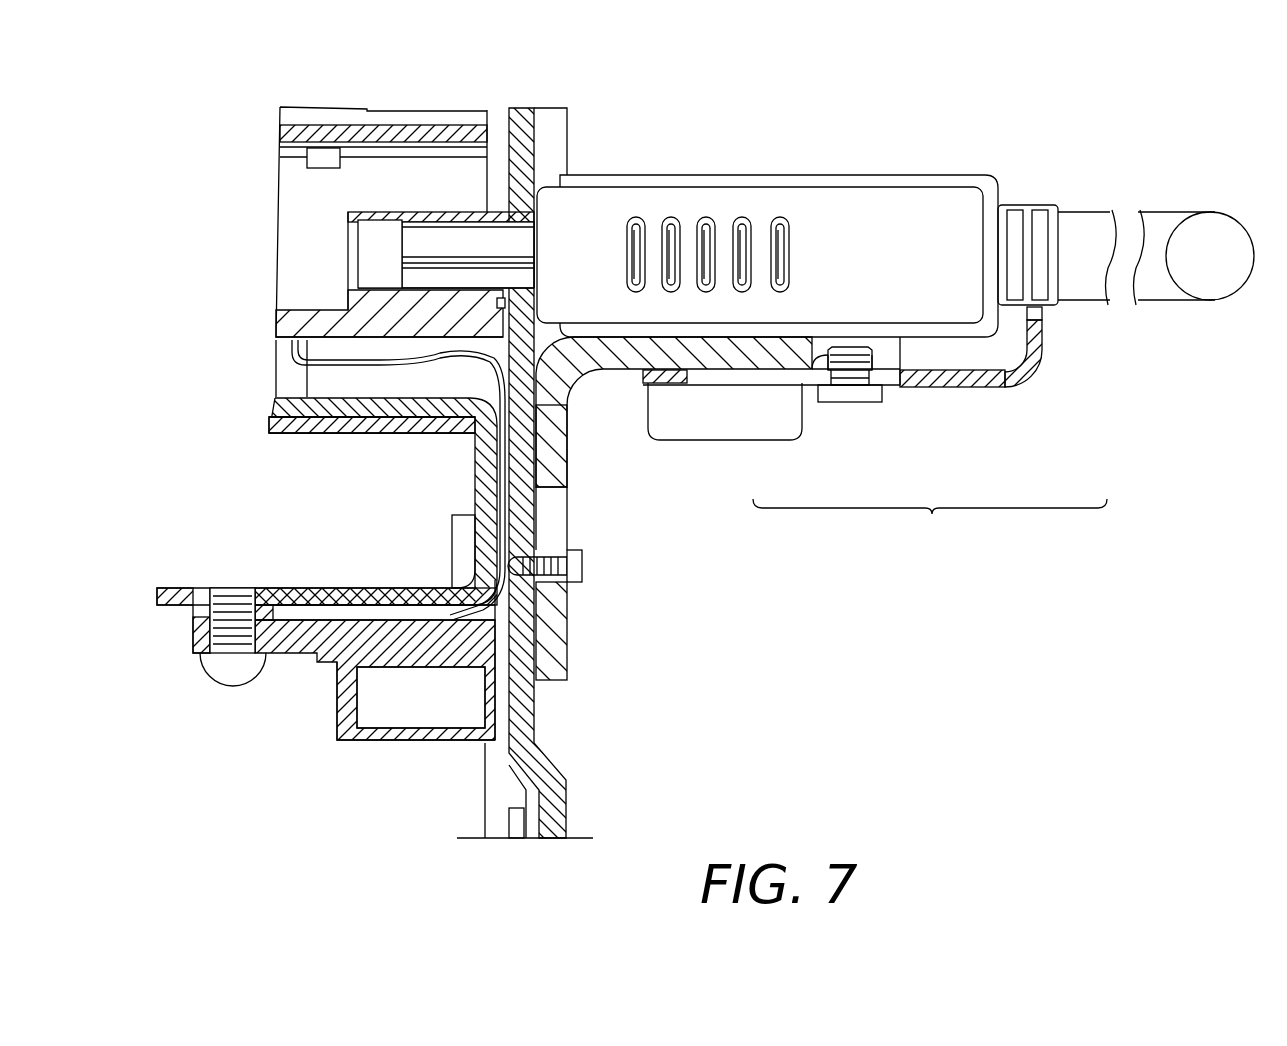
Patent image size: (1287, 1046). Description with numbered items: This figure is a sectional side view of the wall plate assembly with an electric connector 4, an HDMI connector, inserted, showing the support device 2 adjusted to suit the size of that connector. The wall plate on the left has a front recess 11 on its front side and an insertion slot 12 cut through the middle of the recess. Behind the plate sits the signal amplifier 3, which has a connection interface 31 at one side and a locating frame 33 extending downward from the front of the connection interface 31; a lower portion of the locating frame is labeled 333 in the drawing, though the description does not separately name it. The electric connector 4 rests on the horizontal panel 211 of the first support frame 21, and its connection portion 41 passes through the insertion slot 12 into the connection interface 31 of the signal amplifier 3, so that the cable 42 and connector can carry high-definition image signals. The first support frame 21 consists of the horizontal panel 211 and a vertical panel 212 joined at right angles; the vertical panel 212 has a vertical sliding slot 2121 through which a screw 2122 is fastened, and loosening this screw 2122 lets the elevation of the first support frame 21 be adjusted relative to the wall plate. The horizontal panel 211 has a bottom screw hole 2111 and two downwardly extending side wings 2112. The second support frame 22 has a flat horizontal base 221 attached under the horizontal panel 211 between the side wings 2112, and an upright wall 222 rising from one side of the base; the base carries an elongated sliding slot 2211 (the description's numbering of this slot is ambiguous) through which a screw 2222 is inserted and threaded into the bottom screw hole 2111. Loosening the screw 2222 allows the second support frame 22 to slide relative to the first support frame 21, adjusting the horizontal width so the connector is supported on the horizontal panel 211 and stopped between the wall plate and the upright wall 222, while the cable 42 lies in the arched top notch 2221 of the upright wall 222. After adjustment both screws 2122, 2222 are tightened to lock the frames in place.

The support device 2 is at (930, 528).
The signal amplifier 3 is at (290, 135).
The electric connector 4 is at (912, 170).
The front recess 11 is at (537, 120).
The insertion slot 12 is at (523, 208).
The first support frame 21 is at (598, 553).
The second support frame 22 is at (1022, 384).
The connection interface 31 is at (373, 242).
The locating frame 33 is at (486, 453).
The connection portion 41 is at (442, 240).
The cable 42 is at (1082, 223).
The horizontal panel 211 is at (762, 357).
The vertical panel 212 is at (553, 632).
The flat horizontal base 221 is at (980, 373).
The upright wall 222 is at (1033, 357).
The rib 333 is at (356, 741).
The bottom screw hole 2111 is at (814, 393).
The side wings 2112 is at (693, 430).
The vertical sliding slot 2121 is at (555, 528).
The screw 2122 is at (573, 565).
The screw 2211 is at (888, 378).
The arched top notch 2221 is at (1045, 312).
The screw 2222 is at (862, 395).